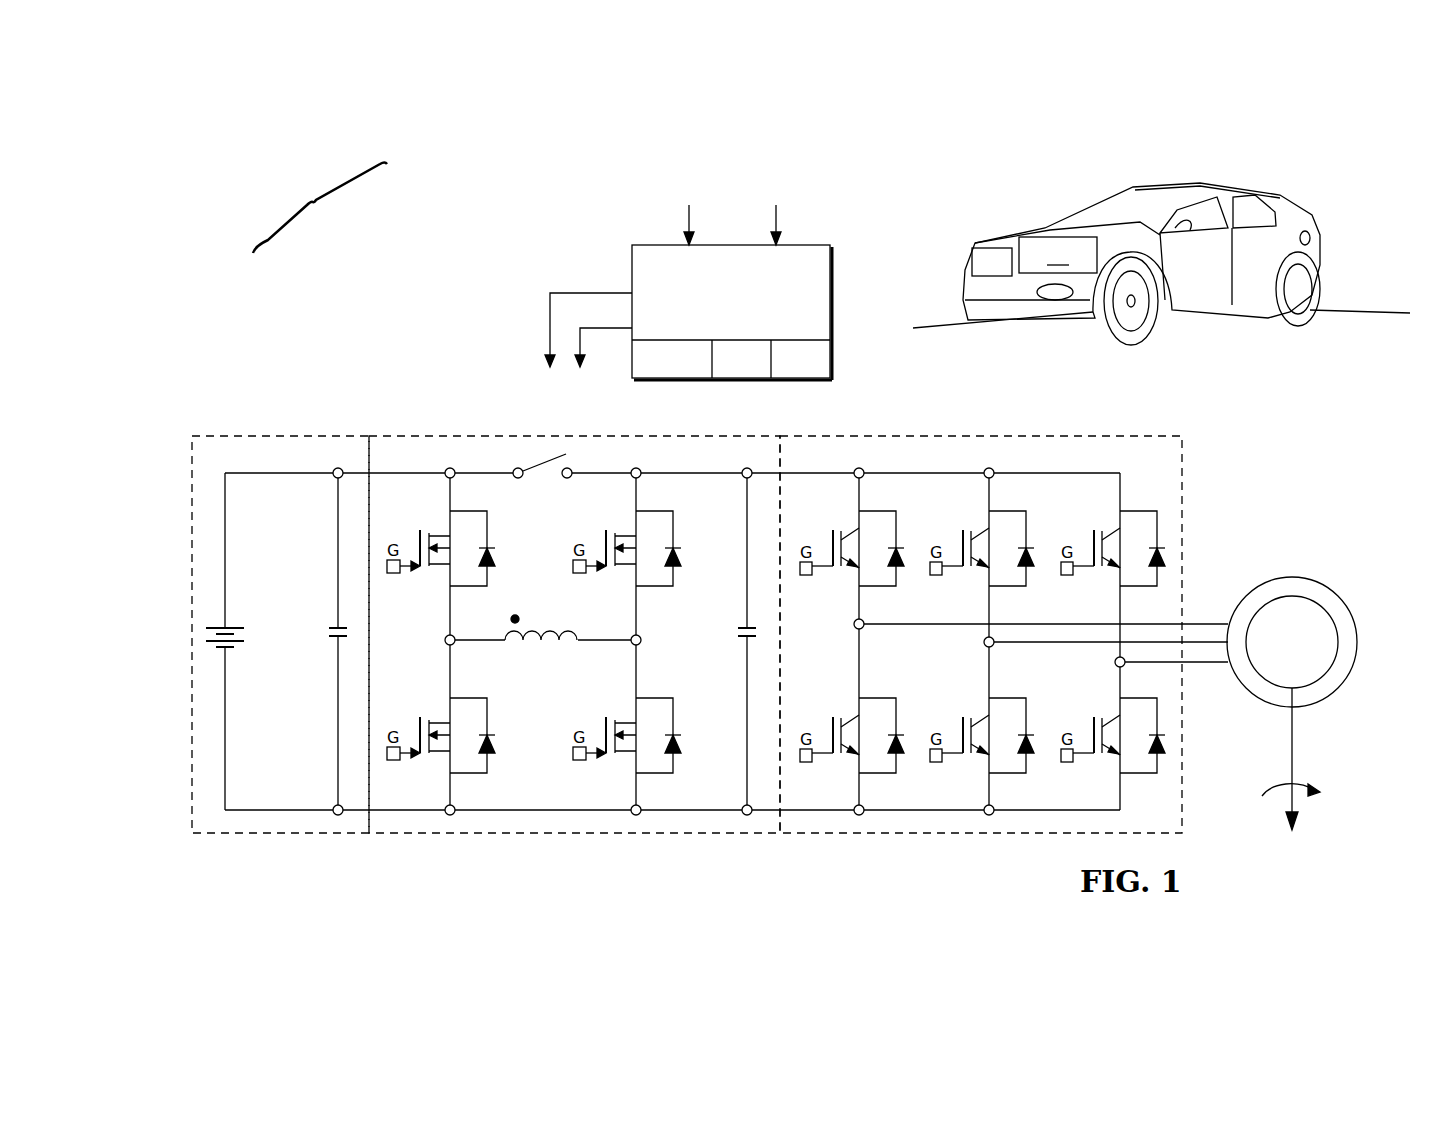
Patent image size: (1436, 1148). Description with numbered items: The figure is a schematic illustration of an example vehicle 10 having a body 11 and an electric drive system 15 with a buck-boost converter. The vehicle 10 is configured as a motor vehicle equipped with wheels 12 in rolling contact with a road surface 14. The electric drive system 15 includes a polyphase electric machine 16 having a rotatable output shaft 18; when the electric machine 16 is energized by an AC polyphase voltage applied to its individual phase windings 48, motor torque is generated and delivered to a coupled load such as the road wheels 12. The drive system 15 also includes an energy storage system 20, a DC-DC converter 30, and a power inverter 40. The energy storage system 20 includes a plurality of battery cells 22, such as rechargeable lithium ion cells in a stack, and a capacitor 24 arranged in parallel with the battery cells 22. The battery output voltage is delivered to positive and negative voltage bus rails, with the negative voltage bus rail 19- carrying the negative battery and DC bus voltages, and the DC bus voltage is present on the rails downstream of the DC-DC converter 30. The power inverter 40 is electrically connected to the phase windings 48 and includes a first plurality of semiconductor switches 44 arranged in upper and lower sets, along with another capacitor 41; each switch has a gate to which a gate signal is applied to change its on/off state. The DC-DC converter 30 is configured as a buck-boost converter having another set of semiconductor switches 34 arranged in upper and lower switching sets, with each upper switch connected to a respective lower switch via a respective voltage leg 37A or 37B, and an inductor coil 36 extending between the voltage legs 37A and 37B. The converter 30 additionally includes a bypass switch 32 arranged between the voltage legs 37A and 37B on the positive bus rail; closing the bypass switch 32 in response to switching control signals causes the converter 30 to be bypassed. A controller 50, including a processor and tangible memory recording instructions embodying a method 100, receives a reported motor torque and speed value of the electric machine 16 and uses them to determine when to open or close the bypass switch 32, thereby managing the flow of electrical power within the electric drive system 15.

The vehicle 10 is at (831, 248).
The body 11 is at (1298, 212).
The wheels 12 is at (1133, 344).
The road surface 14 is at (1352, 325).
The electric drive system 15 is at (675, 218).
The polyphase electric machine 16 is at (1304, 652).
The output shaft 18 is at (1292, 753).
The negative voltage bus rail 19- is at (388, 810).
The energy storage system 20 is at (270, 833).
The battery cells 22 is at (235, 645).
The capacitor 24 is at (338, 628).
The DC-DC converter 30 is at (520, 833).
The bypass switch 32 is at (545, 484).
The semiconductor switches 34 is at (470, 596).
The inductor coil 36 is at (535, 628).
The voltage leg 37A is at (450, 670).
The voltage leg 37B is at (636, 640).
The power inverter 40 is at (850, 833).
The capacitor 41 is at (751, 628).
The semiconductor switches 44 is at (1019, 492).
The phase windings 48 is at (1210, 624).
The controller 50 is at (714, 280).
The method 100 is at (690, 370).